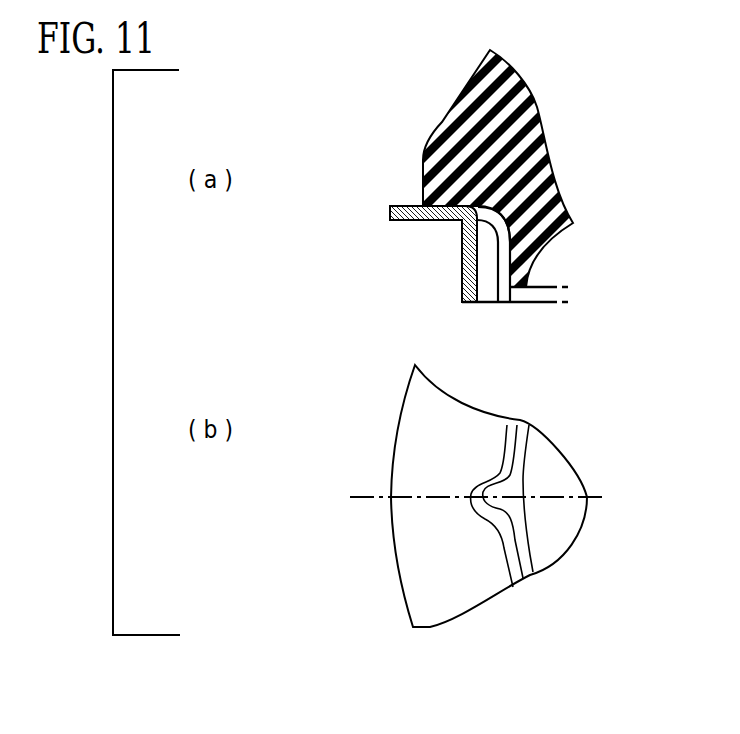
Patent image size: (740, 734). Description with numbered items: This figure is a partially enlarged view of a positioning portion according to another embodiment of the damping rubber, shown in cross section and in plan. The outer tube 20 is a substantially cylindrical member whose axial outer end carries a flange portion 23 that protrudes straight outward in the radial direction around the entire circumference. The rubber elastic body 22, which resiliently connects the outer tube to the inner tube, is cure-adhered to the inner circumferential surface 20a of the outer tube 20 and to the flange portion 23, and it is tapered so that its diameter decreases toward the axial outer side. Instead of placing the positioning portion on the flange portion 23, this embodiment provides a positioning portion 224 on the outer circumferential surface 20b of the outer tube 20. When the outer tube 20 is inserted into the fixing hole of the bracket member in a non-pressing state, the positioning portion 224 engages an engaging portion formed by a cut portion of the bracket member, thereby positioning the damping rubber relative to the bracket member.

The outer tube 20 is at (480, 221).
The inner circumferential surface of the outer tube 20a is at (519, 248).
The outer circumferential surface of the outer tube 20b is at (491, 252).
The rubber elastic body 22 is at (447, 104).
The flange portion 23 is at (390, 213).
The positioning portion 224 is at (462, 280).